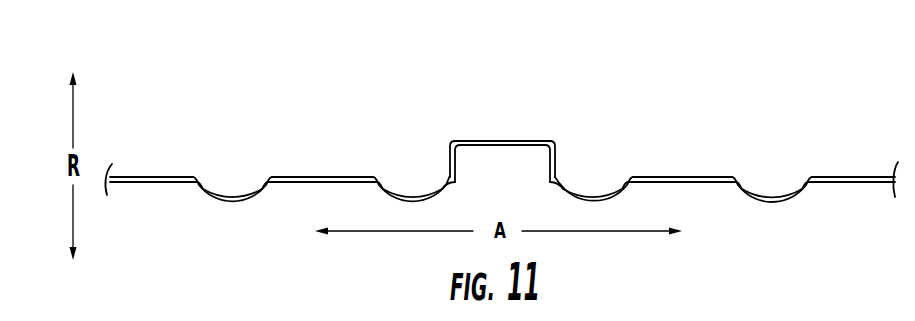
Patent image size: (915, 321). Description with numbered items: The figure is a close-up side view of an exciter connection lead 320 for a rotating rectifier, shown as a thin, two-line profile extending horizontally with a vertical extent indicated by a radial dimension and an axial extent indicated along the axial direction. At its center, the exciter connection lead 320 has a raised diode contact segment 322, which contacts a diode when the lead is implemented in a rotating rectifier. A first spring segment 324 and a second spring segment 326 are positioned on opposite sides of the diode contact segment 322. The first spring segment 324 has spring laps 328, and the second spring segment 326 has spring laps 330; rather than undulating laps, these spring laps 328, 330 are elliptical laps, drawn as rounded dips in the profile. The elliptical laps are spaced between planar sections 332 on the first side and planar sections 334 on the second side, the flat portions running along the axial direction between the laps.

The exciter connection lead 320 is at (129, 79).
The diode contact segment 322 is at (510, 140).
The first spring segment 324 is at (338, 119).
The second spring segment 326 is at (733, 126).
The spring laps 328 is at (222, 163).
The spring laps 330 is at (601, 166).
The planar sections 332 is at (170, 177).
The planar sections 334 is at (700, 177).